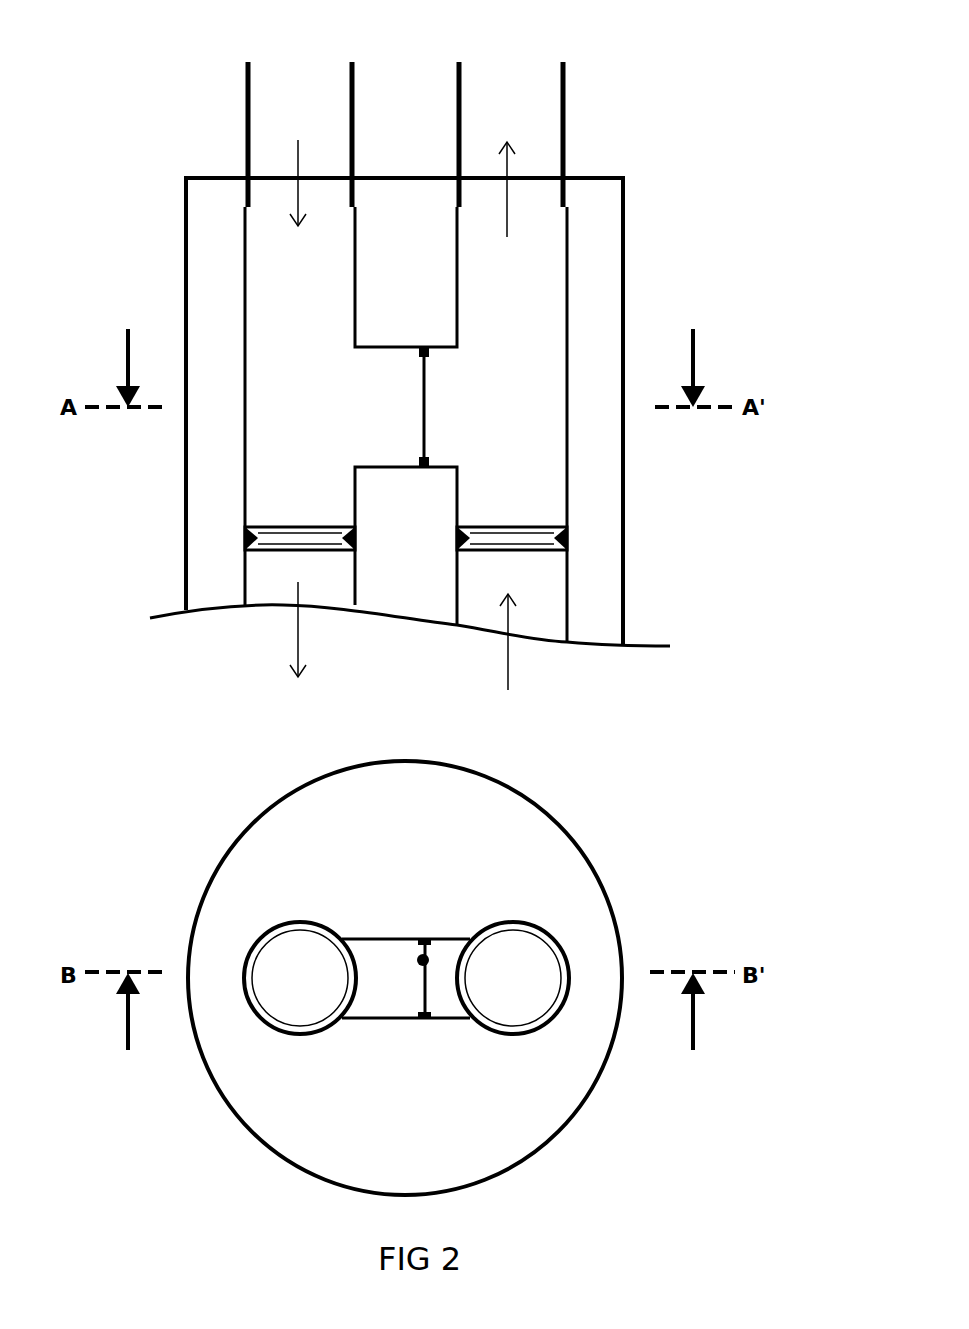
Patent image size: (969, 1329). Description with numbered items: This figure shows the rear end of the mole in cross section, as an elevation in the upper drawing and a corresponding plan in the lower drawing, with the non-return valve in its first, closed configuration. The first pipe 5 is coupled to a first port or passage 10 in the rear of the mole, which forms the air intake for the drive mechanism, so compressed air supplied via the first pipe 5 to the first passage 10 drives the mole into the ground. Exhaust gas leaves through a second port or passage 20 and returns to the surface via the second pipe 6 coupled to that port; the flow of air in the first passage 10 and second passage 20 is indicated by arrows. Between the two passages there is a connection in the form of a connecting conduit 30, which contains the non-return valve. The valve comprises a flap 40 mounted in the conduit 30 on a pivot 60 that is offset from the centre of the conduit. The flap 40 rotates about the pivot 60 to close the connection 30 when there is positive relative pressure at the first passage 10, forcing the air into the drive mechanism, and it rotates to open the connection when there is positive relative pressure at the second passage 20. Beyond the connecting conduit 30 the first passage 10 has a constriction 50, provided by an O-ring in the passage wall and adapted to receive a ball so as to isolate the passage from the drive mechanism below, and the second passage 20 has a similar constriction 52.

The first pipe 5 is at (295, 98).
The second pipe 6 is at (517, 107).
The first passage 10 is at (277, 233).
The second passage 20 is at (540, 233).
The connecting conduit 30 is at (372, 415).
The flap 40 is at (424, 405).
The constriction 50 is at (330, 530).
The constriction 52 is at (557, 530).
The pivot 60 is at (432, 958).